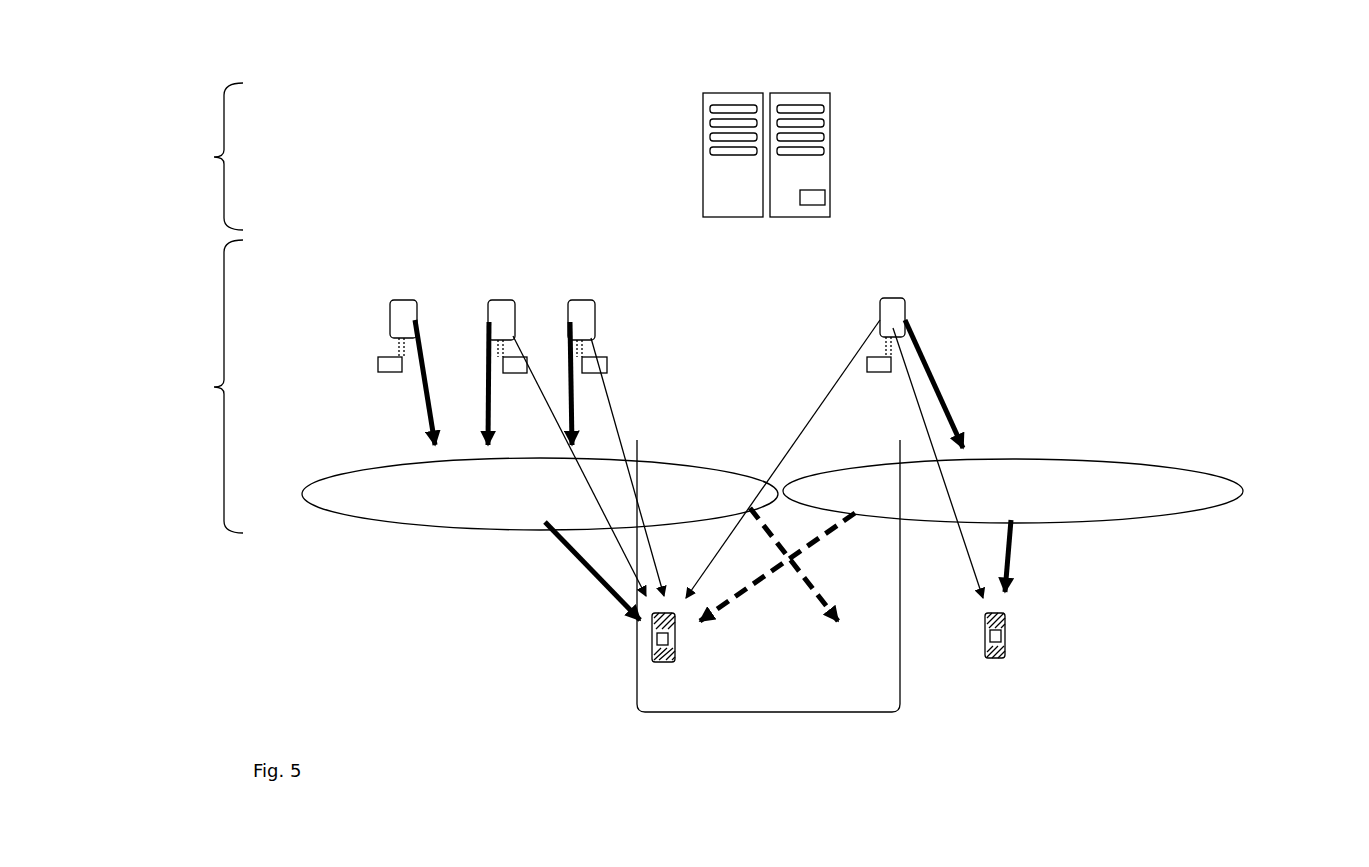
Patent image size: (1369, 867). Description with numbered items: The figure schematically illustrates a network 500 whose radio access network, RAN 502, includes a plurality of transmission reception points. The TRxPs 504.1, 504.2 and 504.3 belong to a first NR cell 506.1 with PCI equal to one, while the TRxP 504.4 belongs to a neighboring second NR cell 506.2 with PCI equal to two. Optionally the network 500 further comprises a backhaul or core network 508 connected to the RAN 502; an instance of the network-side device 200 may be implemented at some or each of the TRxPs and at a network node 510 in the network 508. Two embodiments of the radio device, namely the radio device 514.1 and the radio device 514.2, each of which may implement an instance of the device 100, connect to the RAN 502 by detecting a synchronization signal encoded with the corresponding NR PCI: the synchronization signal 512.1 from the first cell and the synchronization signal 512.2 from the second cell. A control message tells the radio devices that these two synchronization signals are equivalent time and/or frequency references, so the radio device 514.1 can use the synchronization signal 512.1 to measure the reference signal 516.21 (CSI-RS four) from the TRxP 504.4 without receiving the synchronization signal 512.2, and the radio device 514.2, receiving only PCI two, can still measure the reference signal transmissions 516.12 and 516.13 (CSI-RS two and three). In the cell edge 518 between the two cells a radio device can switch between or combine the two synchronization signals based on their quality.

The network 500 is at (287, 63).
The network 508 is at (212, 157).
The RAN 502 is at (212, 387).
The network node 510 is at (833, 113).
The device 200 is at (825, 197).
The TRxP 504.1 is at (416, 300).
The TRxP 504.2 is at (505, 300).
The TRxP 504.3 is at (595, 305).
The TRxP 504.4 is at (907, 300).
The reference signal transmission 516.12 is at (528, 398).
The reference signal transmission 516.13 is at (633, 365).
The reference signal 516.21 is at (806, 440).
The NR cell 506.1 is at (390, 487).
The NR cell 506.2 is at (1157, 483).
The synchronization signal 512.1 is at (550, 588).
The synchronization signal 512.2 is at (705, 643).
The device 100 is at (827, 676).
The radio device 514.1 is at (655, 652).
The radio device 514.2 is at (1005, 648).
The cell edge 518 is at (768, 712).